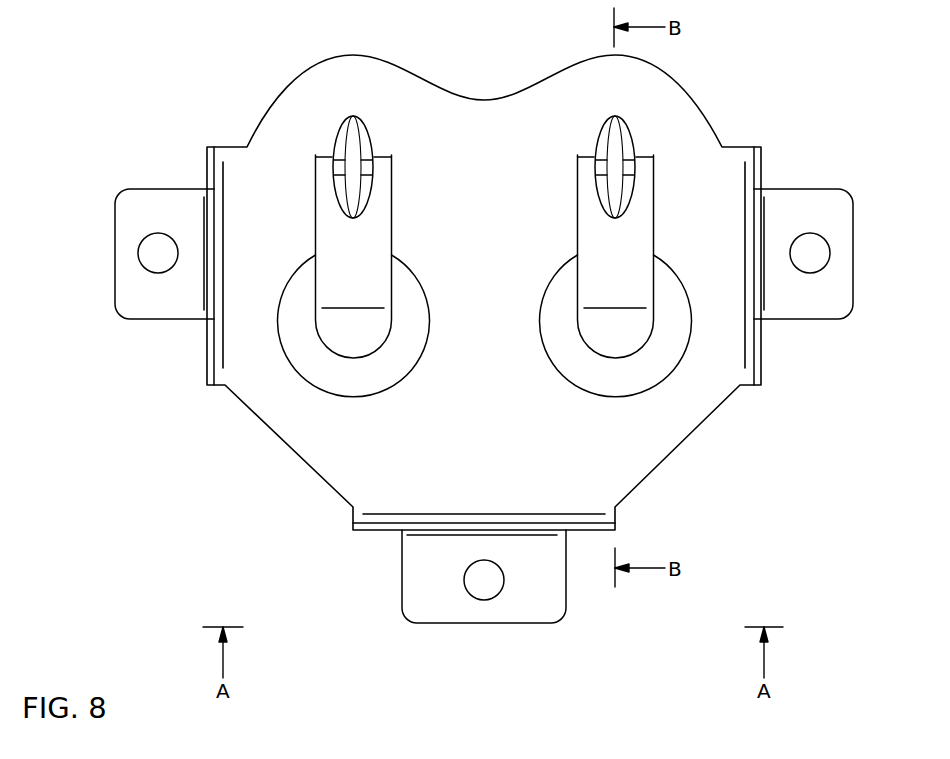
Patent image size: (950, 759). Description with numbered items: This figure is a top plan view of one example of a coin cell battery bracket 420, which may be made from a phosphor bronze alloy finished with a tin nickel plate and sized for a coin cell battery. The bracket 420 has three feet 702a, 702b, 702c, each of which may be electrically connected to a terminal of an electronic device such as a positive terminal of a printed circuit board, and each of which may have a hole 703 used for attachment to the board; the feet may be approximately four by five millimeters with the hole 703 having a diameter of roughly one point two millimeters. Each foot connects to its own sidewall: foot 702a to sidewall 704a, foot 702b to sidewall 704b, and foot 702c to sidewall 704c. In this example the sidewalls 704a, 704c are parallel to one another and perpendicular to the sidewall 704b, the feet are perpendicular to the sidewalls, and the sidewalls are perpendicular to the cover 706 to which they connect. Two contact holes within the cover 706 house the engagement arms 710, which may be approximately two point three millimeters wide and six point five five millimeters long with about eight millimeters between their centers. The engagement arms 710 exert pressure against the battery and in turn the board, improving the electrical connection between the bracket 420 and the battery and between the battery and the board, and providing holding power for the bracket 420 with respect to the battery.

The coin cell battery bracket 420 is at (224, 52).
The foot 702a is at (158, 197).
The foot 702b is at (402, 605).
The foot 702c is at (810, 197).
The hole 703 is at (166, 269).
The sidewall 704a is at (208, 348).
The sidewall 704b is at (375, 527).
The sidewall 704c is at (760, 348).
The cover 706 is at (506, 229).
The engagement arms 710 is at (392, 277).